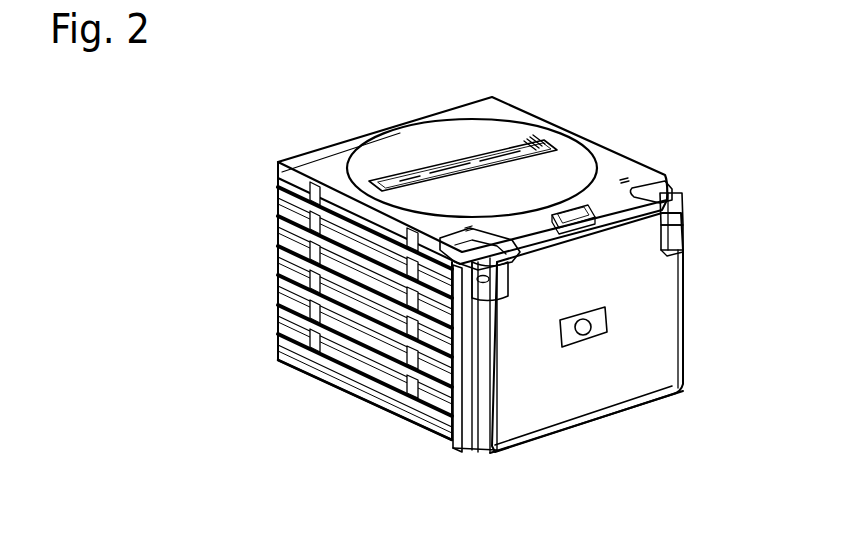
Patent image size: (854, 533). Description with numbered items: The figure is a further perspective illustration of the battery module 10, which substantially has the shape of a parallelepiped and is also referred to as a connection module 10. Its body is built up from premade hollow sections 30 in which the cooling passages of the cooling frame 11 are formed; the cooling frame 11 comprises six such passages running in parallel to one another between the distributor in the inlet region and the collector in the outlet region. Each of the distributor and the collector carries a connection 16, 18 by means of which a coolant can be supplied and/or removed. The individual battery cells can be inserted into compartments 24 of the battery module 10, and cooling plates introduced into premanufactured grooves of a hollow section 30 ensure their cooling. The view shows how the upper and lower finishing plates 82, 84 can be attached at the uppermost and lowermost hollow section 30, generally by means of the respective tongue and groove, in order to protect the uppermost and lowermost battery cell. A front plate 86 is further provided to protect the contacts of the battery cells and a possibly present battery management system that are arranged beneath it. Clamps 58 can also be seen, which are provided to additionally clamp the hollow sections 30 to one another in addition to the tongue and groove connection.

The battery module 10 is at (599, 81).
The cooling frame 11 is at (280, 257).
The connection 16 is at (482, 287).
The connection 18 is at (675, 232).
The compartment 24 is at (683, 206).
The hollow section 30 is at (395, 397).
The clamp 58 is at (317, 350).
The upper finishing plate 82 is at (603, 162).
The lower finishing plate 84 is at (615, 410).
The front plate 86 is at (659, 347).